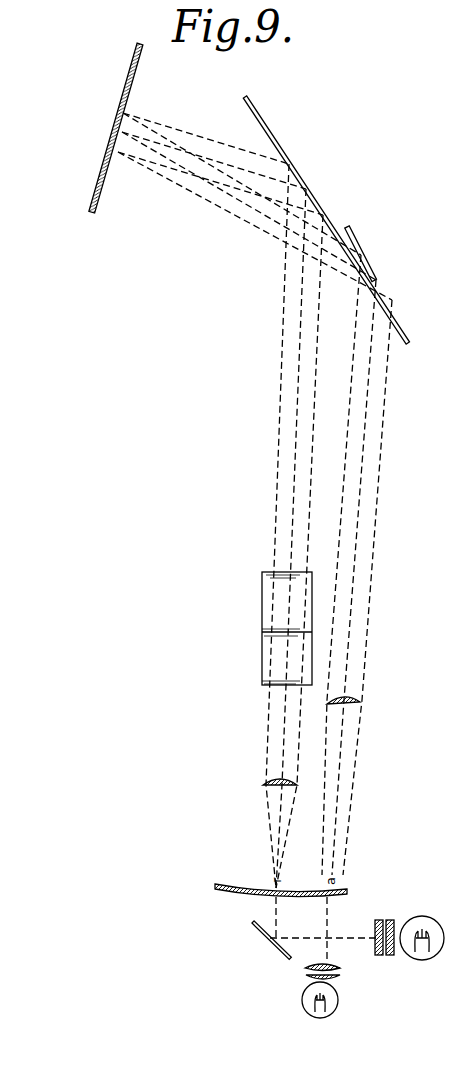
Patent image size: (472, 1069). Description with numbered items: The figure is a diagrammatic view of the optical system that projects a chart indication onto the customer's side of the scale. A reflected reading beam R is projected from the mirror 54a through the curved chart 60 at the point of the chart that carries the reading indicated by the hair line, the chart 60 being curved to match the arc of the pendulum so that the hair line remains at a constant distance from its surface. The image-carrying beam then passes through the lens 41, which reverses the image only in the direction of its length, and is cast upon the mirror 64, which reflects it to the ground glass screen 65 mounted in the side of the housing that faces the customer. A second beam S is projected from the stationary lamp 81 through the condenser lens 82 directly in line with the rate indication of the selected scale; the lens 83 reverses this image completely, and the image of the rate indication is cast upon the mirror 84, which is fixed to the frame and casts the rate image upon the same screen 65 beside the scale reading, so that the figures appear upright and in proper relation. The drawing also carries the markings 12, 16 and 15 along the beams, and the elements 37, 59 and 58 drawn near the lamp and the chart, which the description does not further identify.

The object field / screen numeral 12 is at (185, 409).
The object field numeral 16 is at (194, 326).
The beam section numeral 15 is at (293, 530).
The ground glass screen 65 is at (128, 68).
The mirror 64 is at (286, 148).
The mirror 84 is at (403, 325).
The beam R is at (289, 358).
The beam S is at (379, 398).
The lens 41 is at (272, 608).
The lens 83 is at (360, 698).
The lens 37 is at (270, 780).
The chart 60 is at (240, 888).
The mirror 54a is at (285, 955).
The filter pair 59 is at (388, 920).
The lamp 58 is at (435, 947).
The condenser lens 82 is at (305, 975).
The stationary lamp 81 is at (303, 1003).